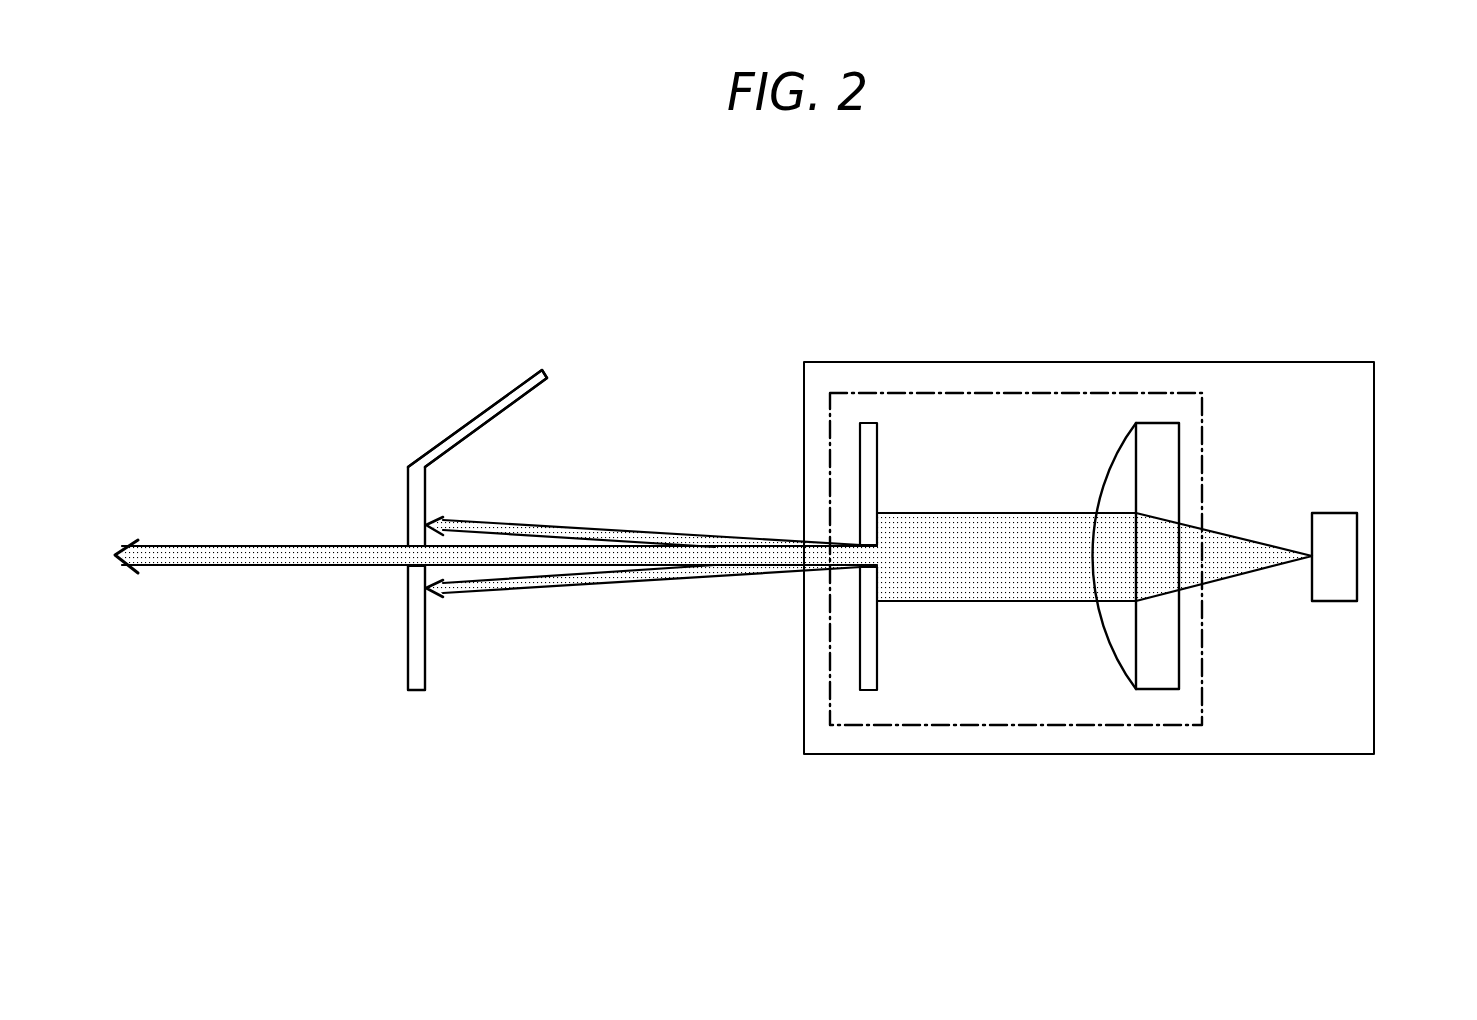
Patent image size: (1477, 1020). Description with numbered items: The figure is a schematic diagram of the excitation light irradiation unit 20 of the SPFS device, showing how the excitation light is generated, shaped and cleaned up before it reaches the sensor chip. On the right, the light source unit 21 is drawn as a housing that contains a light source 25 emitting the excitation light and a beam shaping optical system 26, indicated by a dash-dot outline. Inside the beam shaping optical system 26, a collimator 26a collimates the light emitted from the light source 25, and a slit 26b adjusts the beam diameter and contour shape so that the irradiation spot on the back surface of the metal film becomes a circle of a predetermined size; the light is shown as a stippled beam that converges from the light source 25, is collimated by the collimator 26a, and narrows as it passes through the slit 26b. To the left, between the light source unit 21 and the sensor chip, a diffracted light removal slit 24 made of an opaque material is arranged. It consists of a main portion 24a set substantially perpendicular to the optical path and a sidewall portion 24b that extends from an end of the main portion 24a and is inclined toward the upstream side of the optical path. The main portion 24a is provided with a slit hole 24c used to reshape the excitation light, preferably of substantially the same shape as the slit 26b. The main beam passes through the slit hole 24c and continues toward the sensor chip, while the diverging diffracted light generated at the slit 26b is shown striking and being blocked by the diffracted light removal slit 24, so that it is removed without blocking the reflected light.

The excitation light irradiation unit 20 is at (1295, 178).
The light source unit 21 is at (1352, 723).
The diffracted light removal slit 24 is at (412, 565).
The main portion 24a is at (417, 625).
The sidewall portion 24b is at (493, 407).
The slit hole 24c is at (413, 562).
The light source 25 is at (1342, 585).
The beam shaping optical system 26 is at (1055, 410).
The collimator 26a is at (1155, 668).
The slit 26b is at (867, 678).